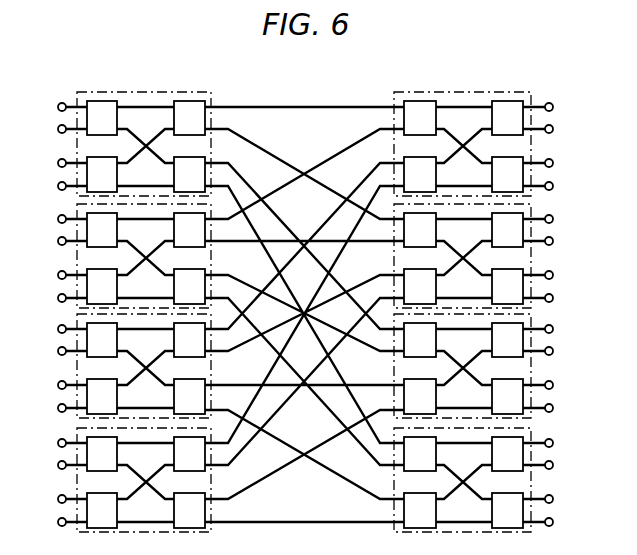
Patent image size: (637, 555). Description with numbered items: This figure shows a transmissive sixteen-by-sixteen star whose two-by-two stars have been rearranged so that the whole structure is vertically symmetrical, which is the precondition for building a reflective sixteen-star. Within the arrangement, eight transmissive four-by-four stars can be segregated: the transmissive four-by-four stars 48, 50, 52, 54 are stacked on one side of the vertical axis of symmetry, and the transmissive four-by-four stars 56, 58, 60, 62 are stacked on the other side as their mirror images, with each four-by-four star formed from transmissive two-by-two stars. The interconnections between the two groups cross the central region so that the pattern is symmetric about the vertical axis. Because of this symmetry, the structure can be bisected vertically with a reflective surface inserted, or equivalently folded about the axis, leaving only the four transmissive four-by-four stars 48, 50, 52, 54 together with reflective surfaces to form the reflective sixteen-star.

The transmissive 4×4 star 48 is at (90, 92).
The transmissive 4×4 star 50 is at (84, 206).
The transmissive 4×4 star 52 is at (84, 315).
The transmissive 4×4 star 54 is at (84, 428).
The transmissive 4×4 star 56 is at (508, 96).
The transmissive 4×4 star 58 is at (527, 212).
The transmissive 4×4 star 60 is at (527, 320).
The transmissive 4×4 star 62 is at (527, 433).